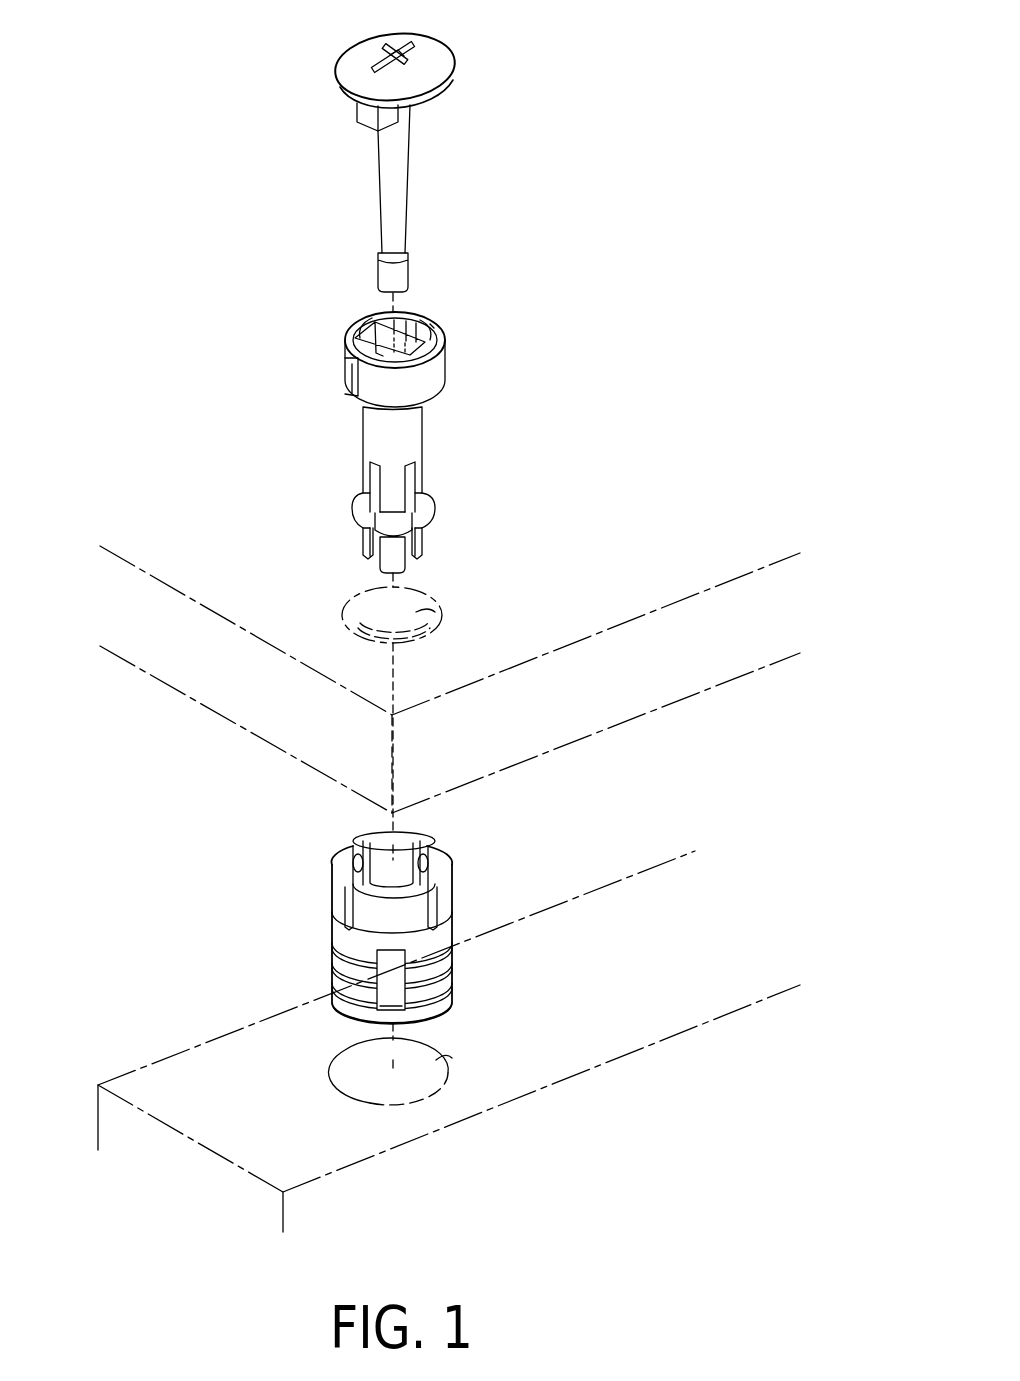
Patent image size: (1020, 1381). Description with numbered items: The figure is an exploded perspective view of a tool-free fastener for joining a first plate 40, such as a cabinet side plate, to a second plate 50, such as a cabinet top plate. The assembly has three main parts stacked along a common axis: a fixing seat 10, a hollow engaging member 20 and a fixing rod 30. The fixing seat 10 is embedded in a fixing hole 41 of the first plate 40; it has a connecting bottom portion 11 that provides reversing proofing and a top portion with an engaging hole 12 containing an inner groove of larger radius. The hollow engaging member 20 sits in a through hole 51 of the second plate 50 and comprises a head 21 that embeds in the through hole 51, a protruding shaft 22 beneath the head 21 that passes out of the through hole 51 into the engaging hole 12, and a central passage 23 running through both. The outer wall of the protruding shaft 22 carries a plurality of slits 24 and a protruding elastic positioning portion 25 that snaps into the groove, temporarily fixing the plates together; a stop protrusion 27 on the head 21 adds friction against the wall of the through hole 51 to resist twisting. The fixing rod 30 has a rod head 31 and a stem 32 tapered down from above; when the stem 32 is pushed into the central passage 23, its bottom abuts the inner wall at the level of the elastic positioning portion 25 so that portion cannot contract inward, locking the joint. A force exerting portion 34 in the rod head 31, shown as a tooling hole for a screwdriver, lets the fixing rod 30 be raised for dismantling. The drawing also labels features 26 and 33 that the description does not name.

The fixing seat 10 is at (409, 921).
The connecting bottom portion 11 is at (340, 982).
The engaging hole 12 is at (430, 848).
The hollow engaging member 20 is at (400, 426).
The head 21 is at (435, 392).
The protruding shaft 22 is at (425, 443).
The central passage 23 is at (365, 333).
The slits 24 is at (368, 470).
The elastic positioning portion 25 is at (353, 508).
The opening 26 is at (375, 316).
The stop protrusion 27 is at (450, 312).
The fixing rod 30 is at (408, 149).
The rod head 31 is at (342, 88).
The stem 32 is at (410, 180).
The neck 33 is at (365, 117).
The force exerting portion 34 is at (412, 37).
The first plate 40 is at (449, 1043).
The fixing hole 41 is at (447, 1068).
The second plate 50 is at (449, 679).
The through hole 51 is at (440, 623).